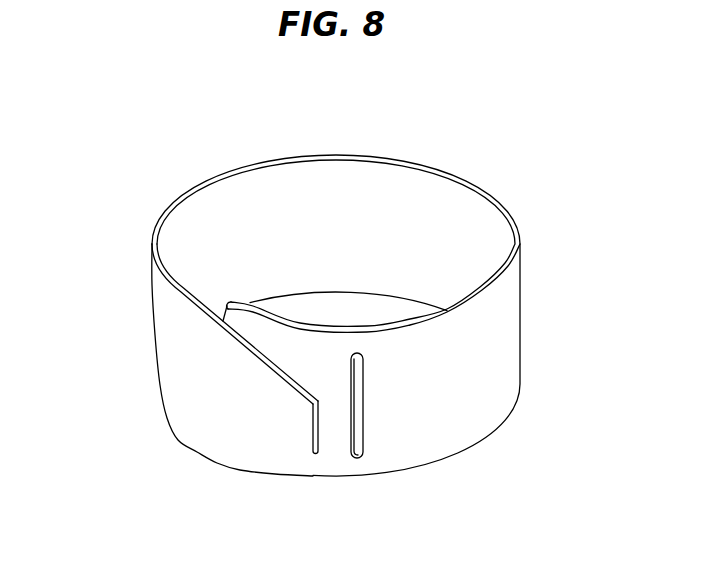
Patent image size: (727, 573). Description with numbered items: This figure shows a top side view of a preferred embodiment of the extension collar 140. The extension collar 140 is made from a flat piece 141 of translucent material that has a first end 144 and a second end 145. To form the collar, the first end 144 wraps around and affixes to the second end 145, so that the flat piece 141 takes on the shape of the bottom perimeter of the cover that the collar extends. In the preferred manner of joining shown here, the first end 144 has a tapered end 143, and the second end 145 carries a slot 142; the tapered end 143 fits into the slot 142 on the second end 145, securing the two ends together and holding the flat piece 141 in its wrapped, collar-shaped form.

The extension collar 140 is at (163, 196).
The flat piece 141 is at (287, 155).
The slot 142 is at (357, 402).
The tapered end 143 is at (307, 432).
The first end 144 is at (245, 425).
The second end 145 is at (247, 300).